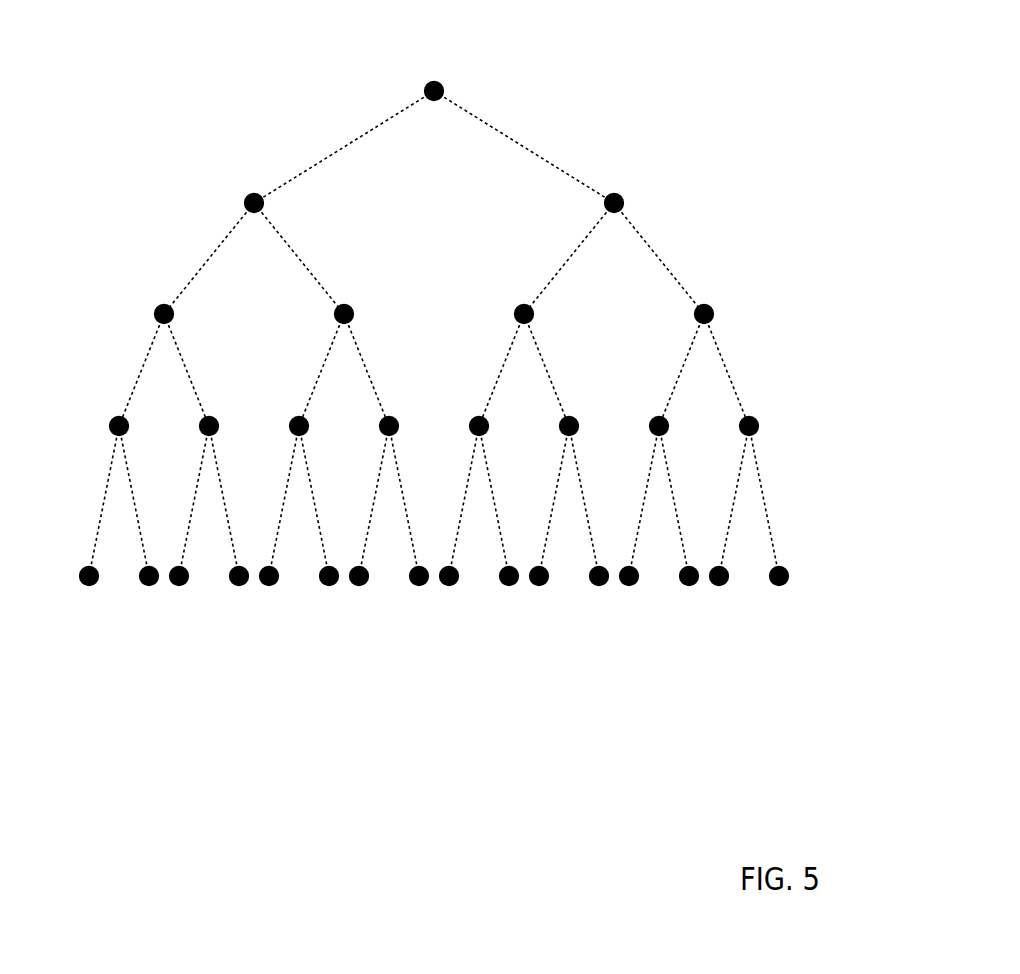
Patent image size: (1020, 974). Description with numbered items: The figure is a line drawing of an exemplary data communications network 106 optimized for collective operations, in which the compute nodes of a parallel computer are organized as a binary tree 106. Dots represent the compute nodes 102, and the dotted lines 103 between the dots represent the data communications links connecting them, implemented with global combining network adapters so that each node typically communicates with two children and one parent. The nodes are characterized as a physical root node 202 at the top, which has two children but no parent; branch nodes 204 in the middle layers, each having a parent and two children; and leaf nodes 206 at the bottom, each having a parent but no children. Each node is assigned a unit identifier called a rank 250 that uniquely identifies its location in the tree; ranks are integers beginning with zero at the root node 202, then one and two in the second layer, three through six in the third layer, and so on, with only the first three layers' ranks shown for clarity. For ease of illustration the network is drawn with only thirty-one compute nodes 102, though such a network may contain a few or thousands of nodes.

The compute nodes 102 is at (509, 586).
The dotted lines 103 is at (353, 142).
The data communications network 106 is at (214, 690).
The physical root node 202 is at (465, 76).
The branch nodes 204 is at (788, 149).
The leaf nodes 206 is at (788, 543).
The rank 250 is at (563, 215).